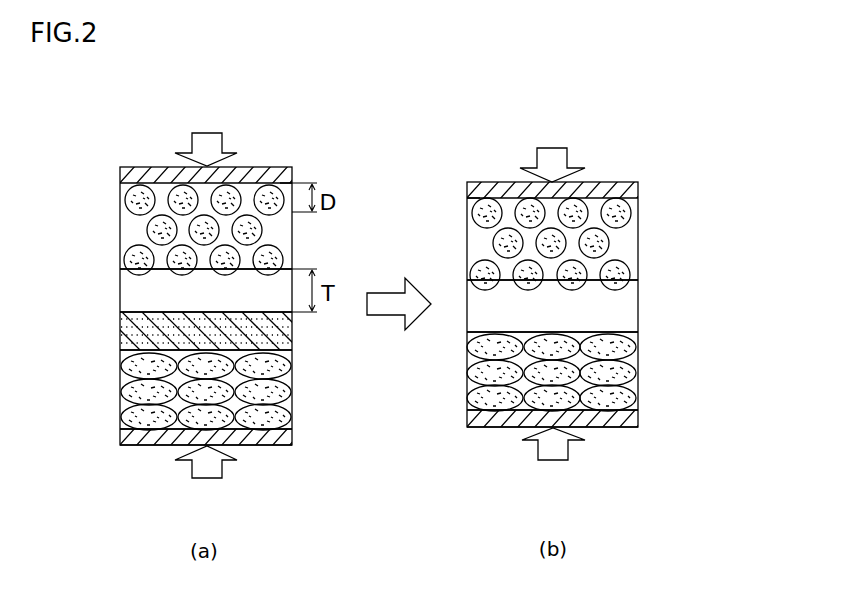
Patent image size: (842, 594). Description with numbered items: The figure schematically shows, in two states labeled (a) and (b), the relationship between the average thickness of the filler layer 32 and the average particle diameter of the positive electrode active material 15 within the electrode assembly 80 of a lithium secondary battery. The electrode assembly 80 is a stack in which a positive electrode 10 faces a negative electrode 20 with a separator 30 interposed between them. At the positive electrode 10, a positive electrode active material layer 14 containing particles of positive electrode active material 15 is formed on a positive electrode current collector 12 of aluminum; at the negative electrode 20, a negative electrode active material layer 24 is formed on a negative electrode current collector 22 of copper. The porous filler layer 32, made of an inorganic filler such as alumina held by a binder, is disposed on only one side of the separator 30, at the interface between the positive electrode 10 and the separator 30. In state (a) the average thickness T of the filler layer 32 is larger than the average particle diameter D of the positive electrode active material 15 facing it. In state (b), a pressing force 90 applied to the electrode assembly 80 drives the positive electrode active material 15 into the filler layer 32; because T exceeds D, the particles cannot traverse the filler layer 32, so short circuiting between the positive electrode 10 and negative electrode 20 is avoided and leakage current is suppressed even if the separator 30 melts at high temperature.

The positive electrode 10 is at (50, 160).
The positive electrode current collector 12 is at (120, 178).
The positive electrode active material layer 14 is at (120, 212).
The positive electrode active material 15 is at (293, 182).
The negative electrode 20 is at (50, 385).
The negative electrode current collector 22 is at (120, 437).
The negative electrode active material layer 24 is at (120, 400).
The separator 30 is at (120, 330).
The filler layer 32 is at (120, 295).
The electrode assembly 80 is at (293, 117).
The pressing force 90 is at (214, 131).